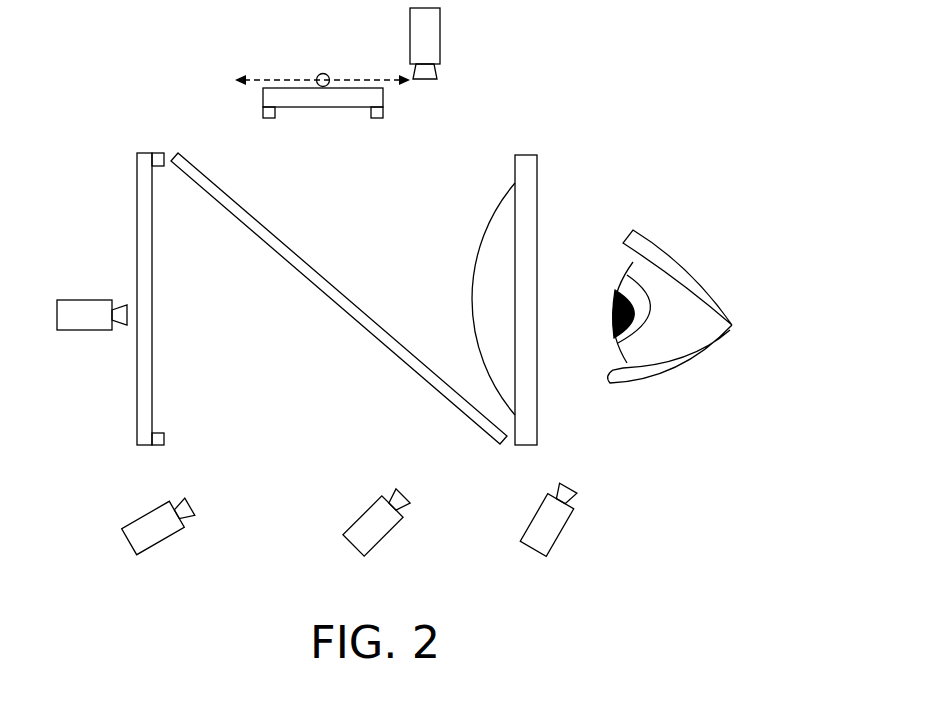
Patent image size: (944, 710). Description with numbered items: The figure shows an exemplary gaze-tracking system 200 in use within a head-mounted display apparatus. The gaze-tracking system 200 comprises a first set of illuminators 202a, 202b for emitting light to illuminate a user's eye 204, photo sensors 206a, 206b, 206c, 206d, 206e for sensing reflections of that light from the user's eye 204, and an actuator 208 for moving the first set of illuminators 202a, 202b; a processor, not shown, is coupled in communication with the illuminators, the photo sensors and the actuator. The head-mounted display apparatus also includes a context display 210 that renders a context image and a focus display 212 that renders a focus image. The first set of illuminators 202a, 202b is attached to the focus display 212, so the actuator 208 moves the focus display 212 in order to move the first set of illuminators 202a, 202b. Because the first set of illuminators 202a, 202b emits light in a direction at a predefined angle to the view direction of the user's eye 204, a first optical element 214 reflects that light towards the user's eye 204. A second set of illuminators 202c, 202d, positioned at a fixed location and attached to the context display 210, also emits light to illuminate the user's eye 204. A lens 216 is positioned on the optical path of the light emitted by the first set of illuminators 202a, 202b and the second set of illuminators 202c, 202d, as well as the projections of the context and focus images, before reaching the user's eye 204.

The gaze-tracking system 200 is at (693, 67).
The first set of illuminators 202a is at (268, 155).
The first set of illuminators 202b is at (380, 155).
The second set of illuminators 202c is at (151, 122).
The second set of illuminators 202d is at (210, 447).
The user's eye 204 is at (670, 288).
The photo sensor 206a is at (479, 43).
The photo sensor 206b is at (92, 355).
The photo sensor 206c is at (193, 529).
The photo sensor 206d is at (413, 525).
The photo sensor 206e is at (593, 521).
The actuator 208 is at (322, 50).
The context display 210 is at (96, 299).
The focus display 212 is at (323, 135).
The first optical element 214 is at (339, 298).
The lens 216 is at (551, 300).